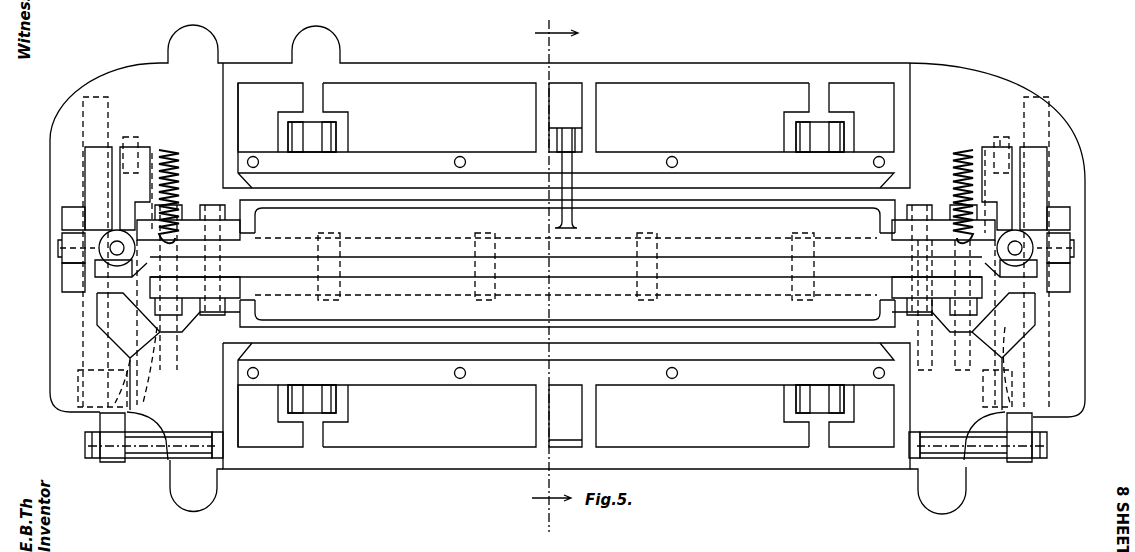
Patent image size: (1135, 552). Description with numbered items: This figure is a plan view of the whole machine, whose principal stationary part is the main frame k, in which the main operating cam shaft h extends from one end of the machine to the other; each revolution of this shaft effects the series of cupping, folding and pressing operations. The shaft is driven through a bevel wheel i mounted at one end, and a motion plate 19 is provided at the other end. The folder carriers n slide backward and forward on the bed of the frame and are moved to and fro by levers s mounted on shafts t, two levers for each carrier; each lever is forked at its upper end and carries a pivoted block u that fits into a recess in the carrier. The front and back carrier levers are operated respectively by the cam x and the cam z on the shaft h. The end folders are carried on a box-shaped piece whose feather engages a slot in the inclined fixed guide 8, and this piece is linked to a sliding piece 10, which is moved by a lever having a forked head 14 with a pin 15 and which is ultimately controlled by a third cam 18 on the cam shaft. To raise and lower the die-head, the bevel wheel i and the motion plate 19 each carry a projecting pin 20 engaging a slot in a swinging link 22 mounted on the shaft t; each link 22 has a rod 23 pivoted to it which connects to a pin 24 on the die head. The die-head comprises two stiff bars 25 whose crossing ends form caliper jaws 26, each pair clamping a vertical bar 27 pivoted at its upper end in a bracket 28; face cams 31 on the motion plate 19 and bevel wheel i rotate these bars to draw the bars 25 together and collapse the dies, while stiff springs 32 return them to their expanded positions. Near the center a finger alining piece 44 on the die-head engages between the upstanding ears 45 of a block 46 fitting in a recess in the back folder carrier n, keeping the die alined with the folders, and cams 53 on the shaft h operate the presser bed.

The main frame k is at (52, 341).
The folder carrier n is at (678, 71).
The pivoted block u is at (318, 138).
The lever s is at (292, 134).
The block 46 is at (572, 108).
The upstanding ears 45 is at (566, 136).
The finger alining piece 44 is at (563, 162).
The main operating cam shaft h is at (567, 263).
The stiff bars 25 is at (462, 278).
The cams 53 is at (306, 266).
The fixed guide 8 is at (566, 274).
The swinging link 22 is at (90, 120).
The face cams 31 is at (126, 146).
The bracket 28 is at (112, 206).
The stiff springs 32 is at (176, 170).
The vertical bar 27 is at (90, 280).
The caliper jaws 26 is at (85, 272).
The projecting pin 20 is at (62, 221).
The pin 24 is at (60, 248).
The rod 23 is at (62, 270).
The sliding piece 10 is at (108, 428).
The forked head 14 is at (152, 455).
The pin 15 is at (178, 447).
The shaft t is at (147, 405).
The bevel wheel i is at (156, 153).
The motion plate 19 is at (985, 160).
The third cam 18 is at (983, 367).
The cam z is at (922, 322).
The cam x is at (952, 319).